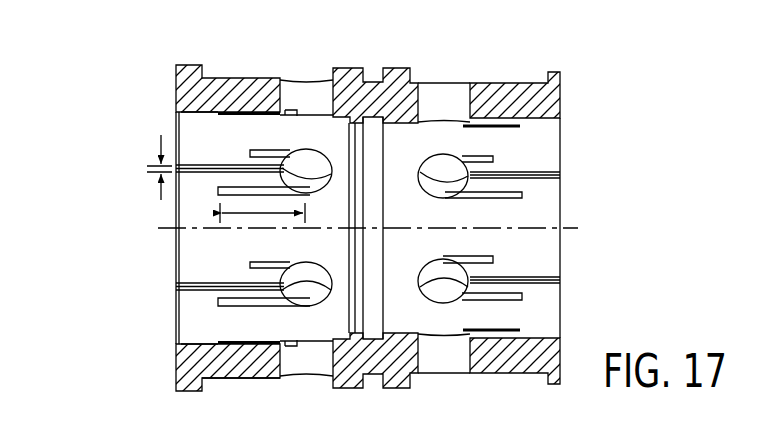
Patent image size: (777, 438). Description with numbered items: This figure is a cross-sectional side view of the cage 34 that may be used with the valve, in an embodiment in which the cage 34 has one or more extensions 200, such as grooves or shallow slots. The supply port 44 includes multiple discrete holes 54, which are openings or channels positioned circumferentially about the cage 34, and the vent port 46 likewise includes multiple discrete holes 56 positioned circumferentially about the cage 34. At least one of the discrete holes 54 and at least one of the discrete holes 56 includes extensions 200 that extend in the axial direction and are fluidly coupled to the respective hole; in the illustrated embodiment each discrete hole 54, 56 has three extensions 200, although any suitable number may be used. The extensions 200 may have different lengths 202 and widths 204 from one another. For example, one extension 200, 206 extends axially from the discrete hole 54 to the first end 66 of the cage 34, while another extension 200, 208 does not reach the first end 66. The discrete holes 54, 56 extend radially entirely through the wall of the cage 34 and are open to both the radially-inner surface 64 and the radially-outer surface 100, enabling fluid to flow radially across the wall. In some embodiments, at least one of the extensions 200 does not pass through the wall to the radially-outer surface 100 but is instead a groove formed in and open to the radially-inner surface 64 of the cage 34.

The cage 34 is at (383, 212).
The supply port 44 is at (234, 48).
The vent port 46 is at (521, 42).
The discrete holes 54 is at (304, 164).
The discrete holes 56 is at (446, 168).
The radially-inner surface 64 is at (203, 343).
The first end 66 is at (177, 343).
The radially-outer surface 100 is at (228, 380).
The extensions 200 is at (260, 150).
The length 202 is at (279, 215).
The width 204 is at (160, 145).
The extension 206 is at (200, 163).
The extension 208 is at (219, 190).